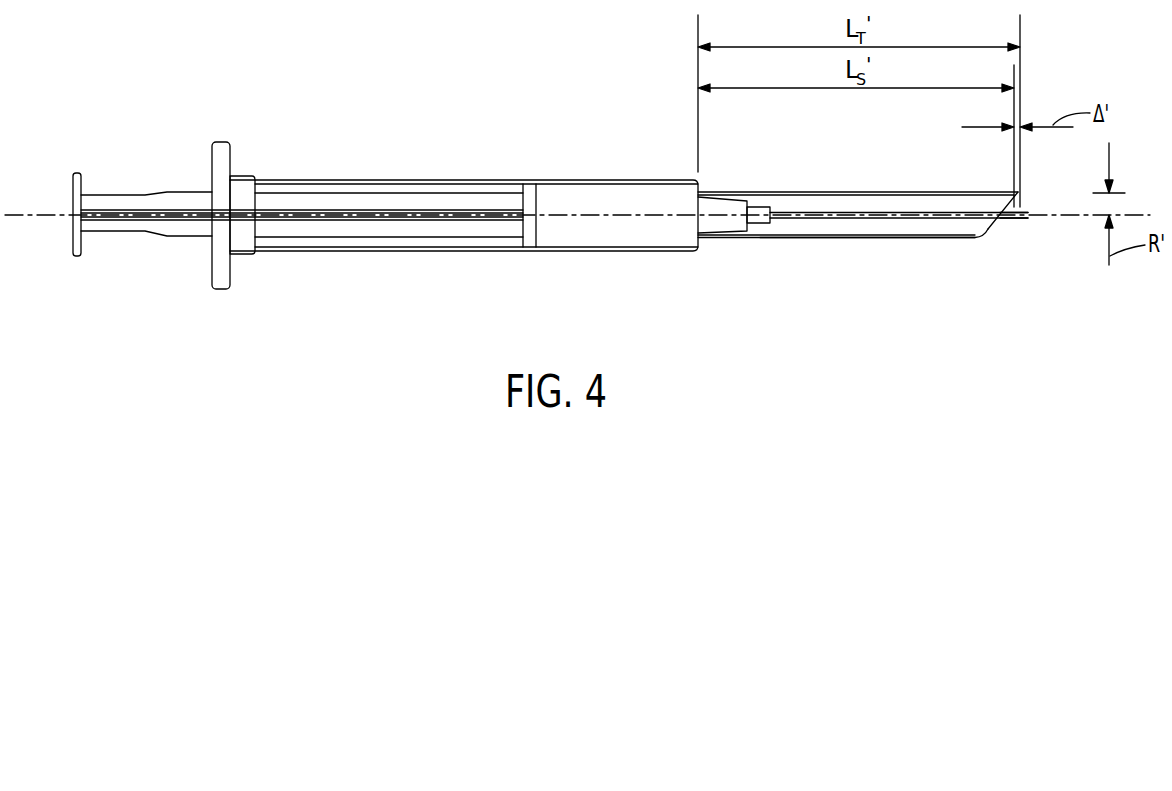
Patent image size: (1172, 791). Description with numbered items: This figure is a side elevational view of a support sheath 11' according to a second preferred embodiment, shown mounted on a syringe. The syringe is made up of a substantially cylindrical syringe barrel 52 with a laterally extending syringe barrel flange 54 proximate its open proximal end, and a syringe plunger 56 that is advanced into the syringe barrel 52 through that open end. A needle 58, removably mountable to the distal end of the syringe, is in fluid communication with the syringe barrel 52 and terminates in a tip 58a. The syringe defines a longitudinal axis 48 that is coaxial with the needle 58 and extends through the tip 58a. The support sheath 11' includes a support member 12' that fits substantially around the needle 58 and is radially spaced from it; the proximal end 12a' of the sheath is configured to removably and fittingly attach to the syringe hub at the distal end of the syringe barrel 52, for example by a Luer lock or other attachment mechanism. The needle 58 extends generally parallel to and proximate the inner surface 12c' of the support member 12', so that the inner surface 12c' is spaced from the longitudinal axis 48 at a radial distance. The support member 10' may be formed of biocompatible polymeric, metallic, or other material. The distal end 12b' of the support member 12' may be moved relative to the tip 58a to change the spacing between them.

The support member 10' is at (580, 172).
The syringe barrel flange 54 is at (222, 141).
The syringe barrel 52 is at (317, 180).
The syringe plunger 56 is at (340, 218).
The proximal end of sheath 12a' is at (731, 180).
The support member 12' is at (858, 182).
The support sheath 11' is at (767, 262).
The needle 58 is at (878, 219).
The tip 58a is at (1027, 215).
The distal end 12b' is at (1036, 193).
The inner surface 12c' is at (867, 267).
The longitudinal axis 48 is at (1147, 207).